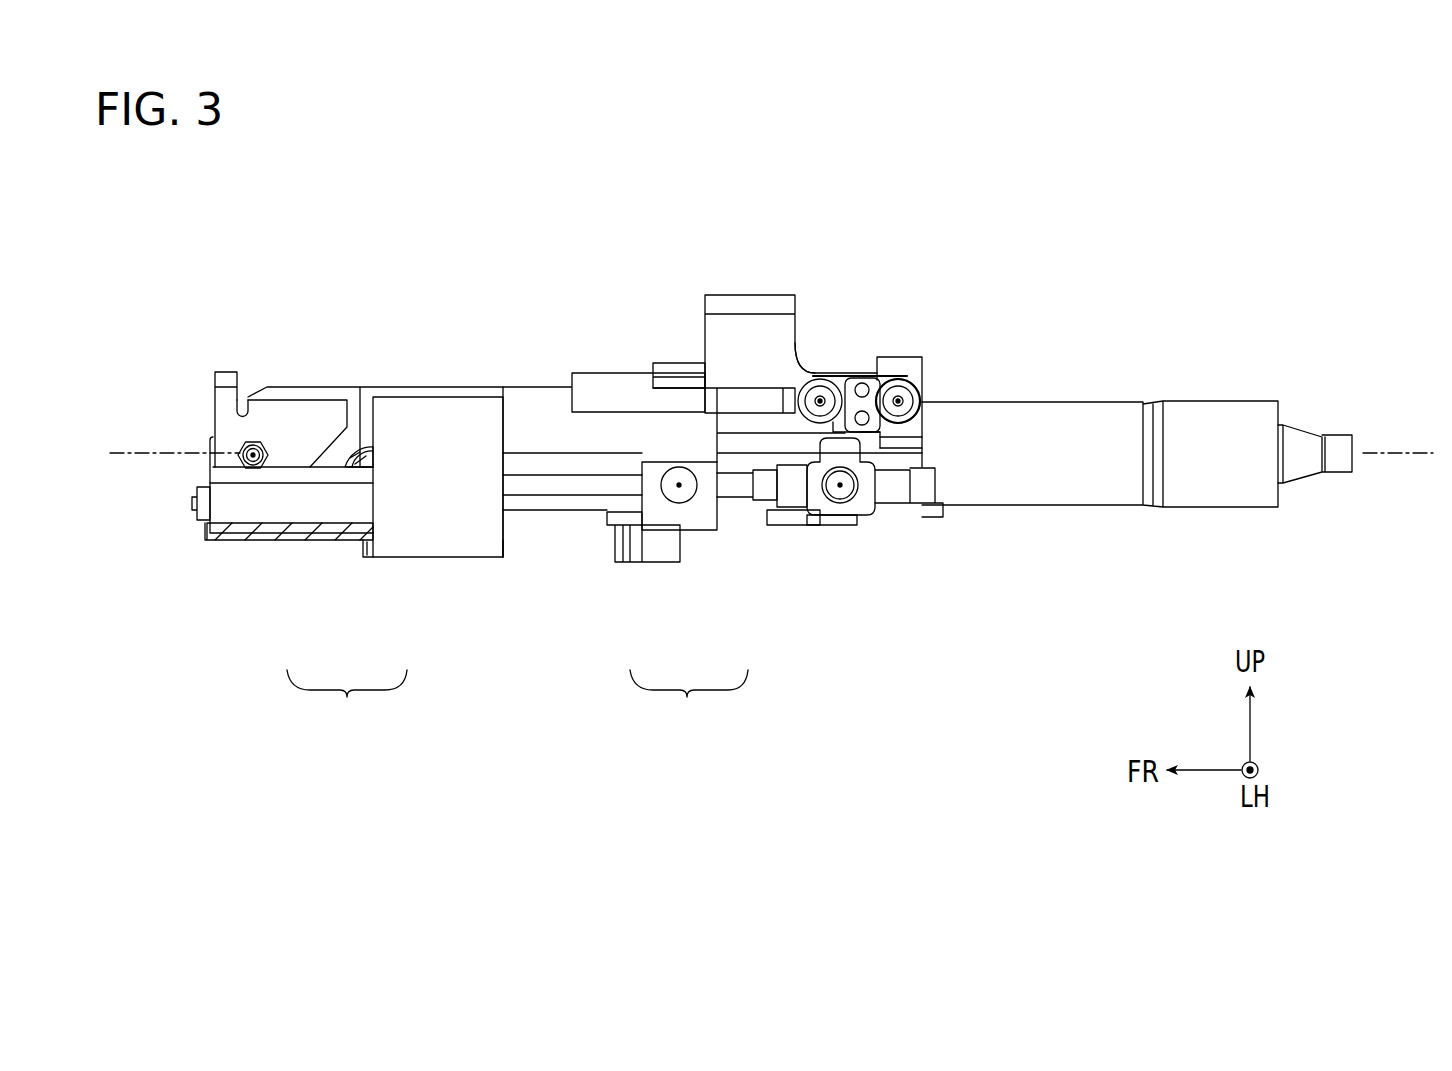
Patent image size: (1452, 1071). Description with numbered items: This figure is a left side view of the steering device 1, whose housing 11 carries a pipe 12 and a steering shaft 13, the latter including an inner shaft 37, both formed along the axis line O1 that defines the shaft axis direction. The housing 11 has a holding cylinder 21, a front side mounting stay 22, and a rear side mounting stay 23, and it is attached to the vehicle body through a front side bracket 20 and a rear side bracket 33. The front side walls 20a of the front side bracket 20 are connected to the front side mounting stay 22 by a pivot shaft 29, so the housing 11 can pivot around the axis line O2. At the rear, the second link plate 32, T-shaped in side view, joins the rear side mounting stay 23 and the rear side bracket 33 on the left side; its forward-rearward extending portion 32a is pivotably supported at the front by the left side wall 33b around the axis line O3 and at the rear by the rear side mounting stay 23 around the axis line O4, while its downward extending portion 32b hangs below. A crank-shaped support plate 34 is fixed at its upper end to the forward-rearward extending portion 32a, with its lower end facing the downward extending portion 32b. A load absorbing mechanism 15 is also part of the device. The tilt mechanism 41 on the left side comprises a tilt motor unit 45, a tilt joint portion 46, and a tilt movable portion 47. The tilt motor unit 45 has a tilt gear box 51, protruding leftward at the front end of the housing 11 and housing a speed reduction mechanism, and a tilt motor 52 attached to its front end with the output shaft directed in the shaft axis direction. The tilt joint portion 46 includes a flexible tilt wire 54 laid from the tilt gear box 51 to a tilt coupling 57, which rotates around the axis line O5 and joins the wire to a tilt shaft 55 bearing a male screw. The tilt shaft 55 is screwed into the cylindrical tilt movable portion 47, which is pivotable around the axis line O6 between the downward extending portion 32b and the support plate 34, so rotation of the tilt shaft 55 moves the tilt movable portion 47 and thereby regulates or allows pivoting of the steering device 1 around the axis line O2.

The steering device 1 is at (1048, 246).
The housing 11 is at (539, 382).
The pipe 12 is at (1250, 511).
The steering shaft 13 is at (1362, 403).
The inner shaft 37 is at (1340, 448).
The load absorbing mechanism 15 is at (677, 361).
The front side bracket 20 is at (222, 378).
The front side wall 20a is at (228, 430).
The holding cylinder 21 is at (518, 392).
The front side mounting stay 22 is at (347, 397).
The rear side mounting stay 23 is at (913, 357).
The pivot shaft 29 is at (243, 467).
The second link plate 32 is at (923, 391).
The forward-rearward extending portion 32a is at (885, 373).
The downward extending portion 32b is at (880, 455).
The rear side bracket 33 is at (752, 303).
The left side wall 33b is at (785, 347).
The support plate 34 is at (867, 506).
The tilt mechanism 41 is at (555, 613).
The tilt motor unit 45 is at (347, 701).
The tilt joint portion 46 is at (689, 701).
The tilt movable portion 47 is at (784, 492).
The tilt gear box 51 is at (399, 535).
The tilt motor 52 is at (300, 513).
The tilt wire 54 is at (583, 485).
The tilt shaft 55 is at (742, 500).
The tilt coupling 57 is at (705, 503).
The axis line O1 is at (120, 453).
The axis line O2 is at (258, 468).
The axis line O3 is at (820, 404).
The axis line O4 is at (900, 404).
The axis line O5 is at (679, 485).
The axis line O6 is at (840, 488).